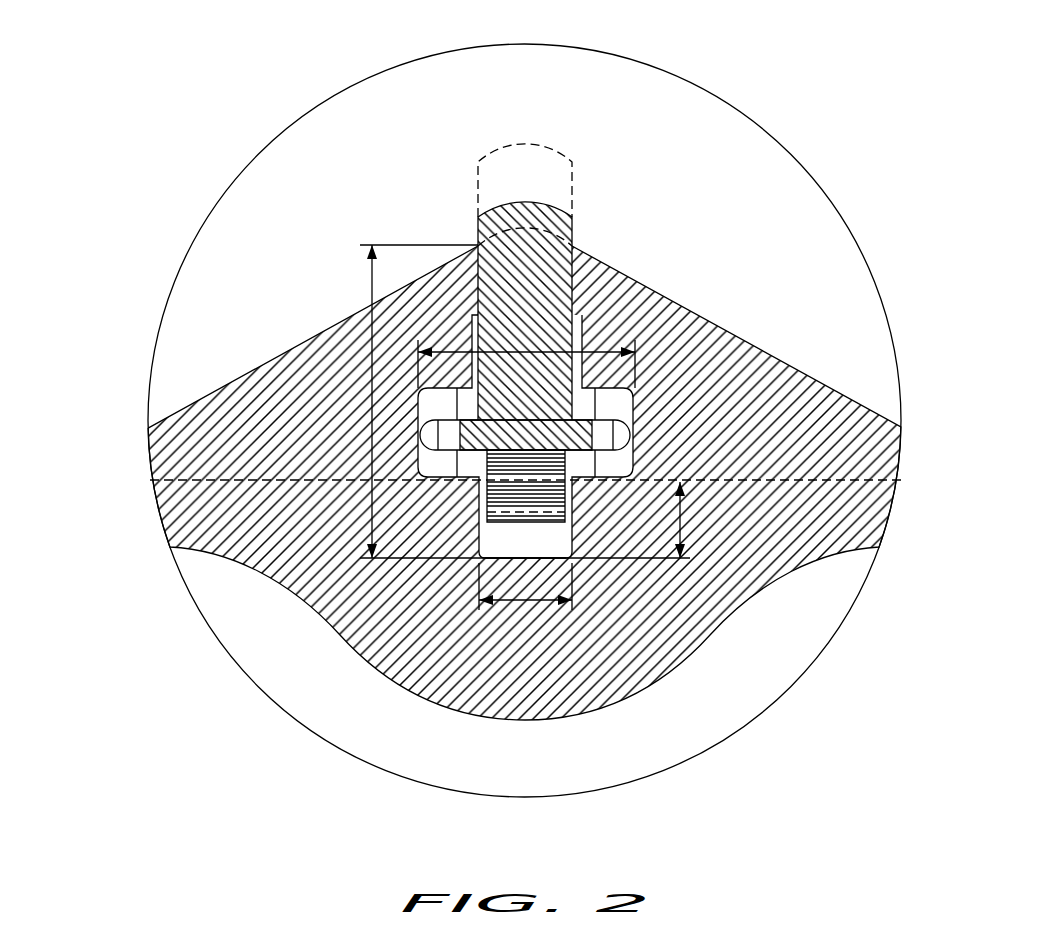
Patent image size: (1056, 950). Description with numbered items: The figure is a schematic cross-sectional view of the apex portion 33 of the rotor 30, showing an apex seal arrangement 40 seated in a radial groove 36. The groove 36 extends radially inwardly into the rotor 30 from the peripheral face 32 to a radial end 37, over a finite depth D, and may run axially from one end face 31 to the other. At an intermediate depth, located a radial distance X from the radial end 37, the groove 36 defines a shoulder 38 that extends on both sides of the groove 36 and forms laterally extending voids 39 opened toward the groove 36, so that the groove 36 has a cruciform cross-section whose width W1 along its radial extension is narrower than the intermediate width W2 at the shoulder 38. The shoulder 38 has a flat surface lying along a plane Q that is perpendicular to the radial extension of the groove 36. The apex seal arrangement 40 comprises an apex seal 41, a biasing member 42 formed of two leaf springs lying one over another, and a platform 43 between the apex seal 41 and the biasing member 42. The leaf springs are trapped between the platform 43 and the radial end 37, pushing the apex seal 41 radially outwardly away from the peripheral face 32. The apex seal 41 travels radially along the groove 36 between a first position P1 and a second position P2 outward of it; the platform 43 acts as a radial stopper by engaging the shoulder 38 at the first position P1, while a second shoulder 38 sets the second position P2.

The rotor 30 is at (222, 410).
The end face 31 is at (215, 453).
The peripheral face 32 is at (332, 320).
The apex portion 33 is at (900, 150).
The radial groove 36 is at (590, 332).
The radial end 37 is at (478, 599).
The shoulder 38 is at (620, 382).
The laterally extending voids 39 is at (437, 463).
The apex seal arrangement 40 is at (657, 277).
The apex seal 41 is at (497, 300).
The biasing member 42 is at (560, 500).
The platform 43 is at (523, 442).
The depth D is at (373, 288).
The radial distance X is at (683, 520).
The width W1 is at (510, 600).
The intermediate width W2 is at (448, 350).
The first position P1 is at (560, 212).
The second position P2 is at (573, 160).
The plane Q is at (747, 478).